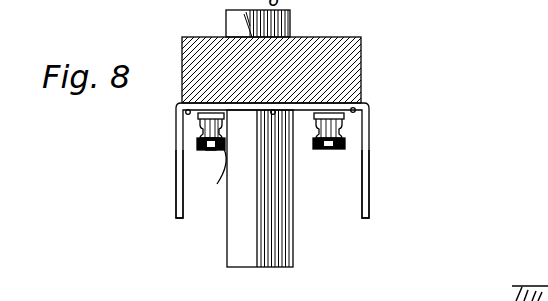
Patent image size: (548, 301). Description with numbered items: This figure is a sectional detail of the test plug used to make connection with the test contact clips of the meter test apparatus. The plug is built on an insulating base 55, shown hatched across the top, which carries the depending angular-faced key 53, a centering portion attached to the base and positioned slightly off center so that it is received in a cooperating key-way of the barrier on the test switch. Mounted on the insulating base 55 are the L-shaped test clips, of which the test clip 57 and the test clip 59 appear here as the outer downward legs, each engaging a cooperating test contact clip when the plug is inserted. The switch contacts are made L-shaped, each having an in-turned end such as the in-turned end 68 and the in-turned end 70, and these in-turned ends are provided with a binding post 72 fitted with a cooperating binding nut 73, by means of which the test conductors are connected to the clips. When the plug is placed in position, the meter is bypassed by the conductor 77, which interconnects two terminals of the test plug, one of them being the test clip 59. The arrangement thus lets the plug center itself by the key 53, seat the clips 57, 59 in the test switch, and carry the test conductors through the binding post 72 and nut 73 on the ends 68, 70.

The insulating base 55 is at (352, 68).
The in-turned end 70 is at (348, 102).
The test clip 57 is at (178, 178).
The test clip 59 is at (363, 148).
The depending angular-faced key 53 is at (275, 248).
The in-turned end 68 is at (188, 113).
The binding post 72 is at (212, 150).
The binding nut 73 is at (212, 177).
The conductor 77 is at (313, 147).